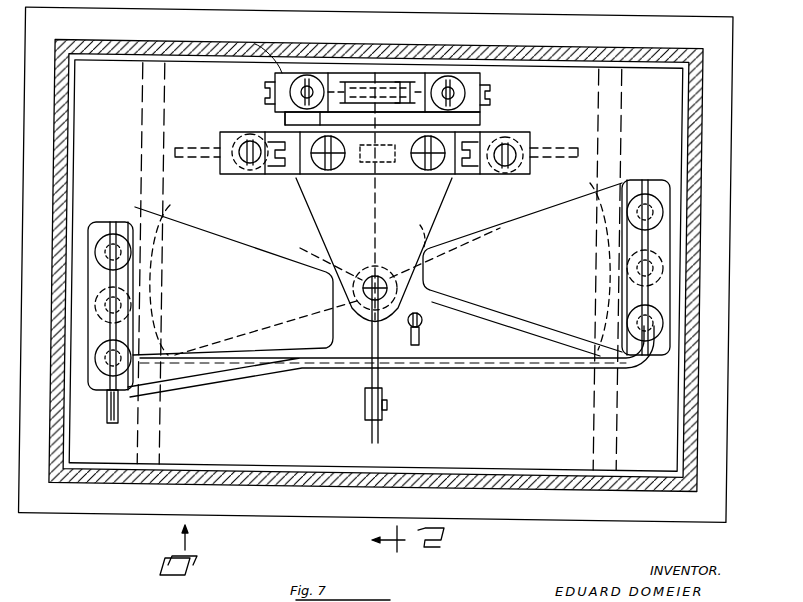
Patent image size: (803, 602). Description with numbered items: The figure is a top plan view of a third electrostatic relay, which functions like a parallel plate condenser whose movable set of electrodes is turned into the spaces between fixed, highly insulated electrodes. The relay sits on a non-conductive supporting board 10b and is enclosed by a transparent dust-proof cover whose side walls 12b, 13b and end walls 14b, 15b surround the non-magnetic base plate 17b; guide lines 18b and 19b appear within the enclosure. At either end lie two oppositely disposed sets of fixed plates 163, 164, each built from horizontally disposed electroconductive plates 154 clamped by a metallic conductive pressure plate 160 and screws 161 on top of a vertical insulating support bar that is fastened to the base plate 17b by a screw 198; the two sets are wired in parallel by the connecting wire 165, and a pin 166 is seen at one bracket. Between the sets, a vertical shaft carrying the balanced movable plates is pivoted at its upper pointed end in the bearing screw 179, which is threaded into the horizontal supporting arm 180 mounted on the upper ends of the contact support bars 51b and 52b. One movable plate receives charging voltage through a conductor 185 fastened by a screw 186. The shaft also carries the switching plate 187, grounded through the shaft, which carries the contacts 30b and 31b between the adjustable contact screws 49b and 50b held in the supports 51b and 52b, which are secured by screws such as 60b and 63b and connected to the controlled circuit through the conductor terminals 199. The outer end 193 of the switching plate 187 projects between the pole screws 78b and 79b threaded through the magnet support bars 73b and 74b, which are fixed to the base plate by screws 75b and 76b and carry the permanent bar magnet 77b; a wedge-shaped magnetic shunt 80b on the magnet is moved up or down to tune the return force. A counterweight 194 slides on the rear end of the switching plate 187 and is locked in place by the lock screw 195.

The supporting board 10b is at (93, 537).
The side wall 12b is at (268, 474).
The side wall 13b is at (312, 62).
The end wall 14b is at (52, 192).
The end wall 15b is at (700, 202).
The base plate 17b is at (238, 466).
The guide line 18b is at (153, 418).
The guide line 19b is at (589, 410).
The contact 30b is at (348, 180).
The contact 31b is at (420, 170).
The contact screw 49b is at (296, 185).
The contact screw 50b is at (486, 184).
The contact support bar 51b is at (238, 174).
The contact support bar 52b is at (520, 174).
The screw 60b is at (507, 152).
The screw 63b is at (245, 132).
The magnet support bar 73b is at (254, 51).
The magnet support bar 74b is at (456, 75).
The screw 75b is at (300, 75).
The screw 76b is at (480, 120).
The permanent bar magnet 77b is at (395, 80).
The pole screw 78b is at (265, 85).
The pole screw 79b is at (490, 92).
The magnetic variable metal shunt 80b is at (285, 120).
The fixed electroconductive plate 154 is at (326, 335).
The pressure plate 160 is at (88, 241).
The screw 161 is at (113, 240).
The set of fixed plates 163 is at (213, 376).
The set of fixed plates 164 is at (618, 186).
The connecting wire 165 is at (432, 370).
The pin 166 is at (110, 425).
The bearing screw 179 is at (387, 288).
The horizontal supporting arm 180 is at (425, 262).
The conductor 185 is at (419, 336).
The screw 186 is at (422, 320).
The switching plate 187 is at (378, 378).
The outer end of switching plate 193 is at (372, 75).
The counterweight 194 is at (365, 408).
The lock screw 195 is at (387, 405).
The screw 198 is at (145, 293).
The conductor terminal 199 is at (185, 146).